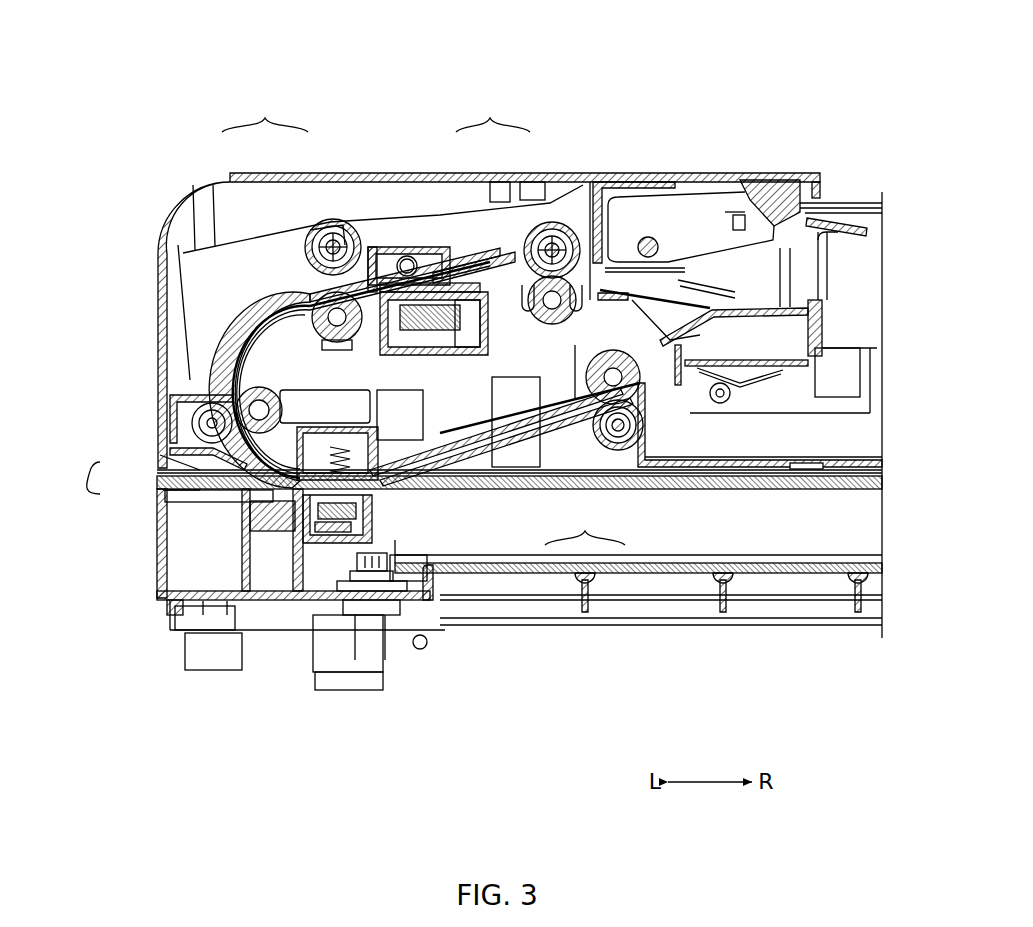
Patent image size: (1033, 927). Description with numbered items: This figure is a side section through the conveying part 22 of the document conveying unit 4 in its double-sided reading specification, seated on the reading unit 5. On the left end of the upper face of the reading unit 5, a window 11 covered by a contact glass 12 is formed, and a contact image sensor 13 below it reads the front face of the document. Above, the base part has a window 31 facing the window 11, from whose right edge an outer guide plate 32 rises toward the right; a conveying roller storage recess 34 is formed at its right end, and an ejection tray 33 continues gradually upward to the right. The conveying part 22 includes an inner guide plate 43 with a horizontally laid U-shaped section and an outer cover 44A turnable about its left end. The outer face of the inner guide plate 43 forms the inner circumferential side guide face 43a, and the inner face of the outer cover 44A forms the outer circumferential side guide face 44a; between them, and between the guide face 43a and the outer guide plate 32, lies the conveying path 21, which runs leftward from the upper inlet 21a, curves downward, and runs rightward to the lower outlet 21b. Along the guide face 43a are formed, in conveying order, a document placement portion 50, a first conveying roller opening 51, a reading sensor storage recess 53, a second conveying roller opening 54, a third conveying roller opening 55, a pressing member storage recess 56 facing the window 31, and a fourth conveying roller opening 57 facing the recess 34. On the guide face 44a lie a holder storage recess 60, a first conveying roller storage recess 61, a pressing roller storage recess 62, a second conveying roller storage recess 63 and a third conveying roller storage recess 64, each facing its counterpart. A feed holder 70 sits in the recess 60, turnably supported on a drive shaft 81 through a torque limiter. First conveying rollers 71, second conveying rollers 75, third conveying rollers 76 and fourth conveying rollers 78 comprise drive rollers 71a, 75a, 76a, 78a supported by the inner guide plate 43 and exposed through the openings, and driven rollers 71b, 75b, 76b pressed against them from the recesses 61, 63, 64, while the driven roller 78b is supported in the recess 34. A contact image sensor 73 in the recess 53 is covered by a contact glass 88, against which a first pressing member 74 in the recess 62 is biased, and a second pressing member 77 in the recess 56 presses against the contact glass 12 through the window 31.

The document conveying unit 4 is at (442, 125).
The reading unit 5 is at (501, 727).
The window 11 is at (395, 540).
The contact glass 12 is at (393, 567).
The contact image sensor 13 is at (303, 553).
The conveying path 21 is at (173, 380).
The inlet 21a is at (590, 182).
The outlet 21b is at (640, 403).
The conveying part 22 is at (783, 160).
The window 31 is at (403, 482).
The outer guide plate 32 is at (500, 470).
The ejection tray 33 is at (770, 460).
The conveying roller storage recess 34 is at (605, 485).
The inner guide plate 43 is at (231, 366).
The inner circumferential side guide face 43a is at (240, 382).
The outer cover 44A is at (152, 270).
The outer circumferential side guide face 44a is at (238, 345).
The document placement portion 50 is at (768, 307).
The first conveying roller opening 51 is at (517, 307).
The reading sensor storage recess 53 is at (392, 333).
The second conveying roller opening 54 is at (328, 340).
The third conveying roller opening 55 is at (240, 380).
The pressing member storage recess 56 is at (353, 450).
The fourth conveying roller opening 57 is at (557, 383).
The holder storage recess 60 is at (617, 185).
The first conveying roller storage recess 61 is at (550, 222).
The pressing roller storage recess 62 is at (415, 247).
The second conveying roller storage recess 63 is at (333, 219).
The third conveying roller storage recess 64 is at (180, 417).
The feed holder 70 is at (705, 205).
The first conveying rollers 71 is at (481, 186).
The drive roller 71a is at (525, 250).
The driven roller 71b is at (545, 246).
The contact image sensor 73 is at (413, 330).
The first pressing member 74 is at (370, 220).
The second conveying rollers 75 is at (265, 111).
The drive roller 75a is at (305, 285).
The driven roller 75b is at (330, 278).
The third conveying rollers 76 is at (78, 478).
The drive roller 76a is at (163, 493).
The driven roller 76b is at (160, 460).
The second pressing member 77 is at (337, 445).
The fourth conveying rollers 78 is at (585, 548).
The drive roller 78a is at (605, 398).
The driven roller 78b is at (630, 443).
The drive shaft 81 is at (658, 240).
The contact glass 88 is at (477, 333).